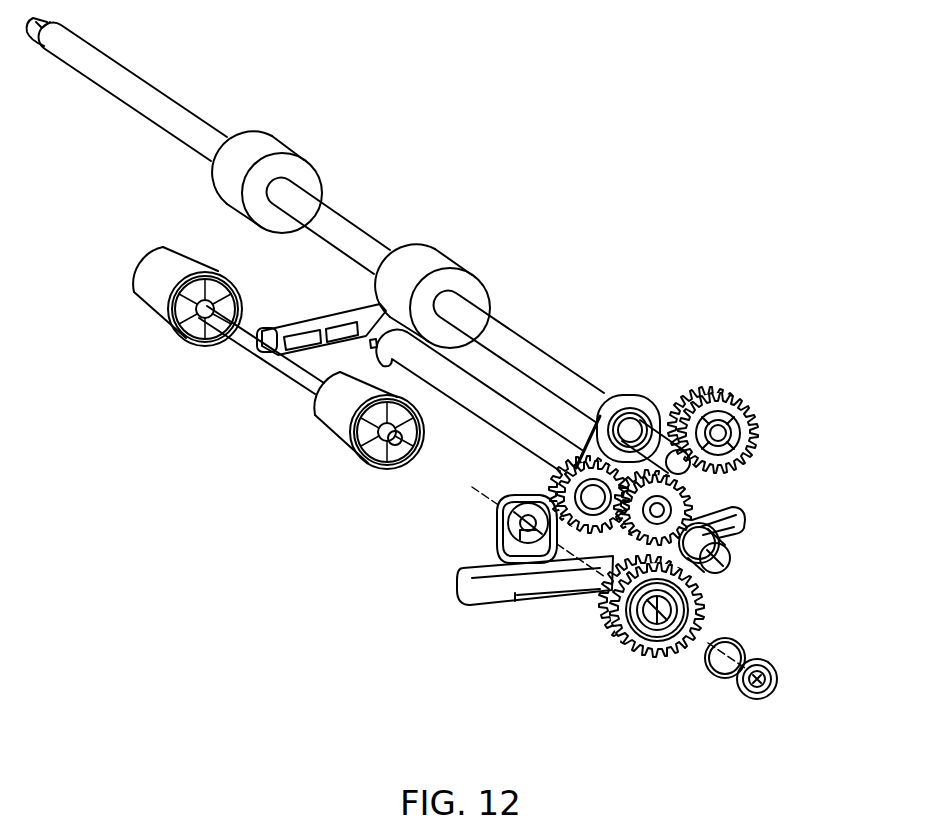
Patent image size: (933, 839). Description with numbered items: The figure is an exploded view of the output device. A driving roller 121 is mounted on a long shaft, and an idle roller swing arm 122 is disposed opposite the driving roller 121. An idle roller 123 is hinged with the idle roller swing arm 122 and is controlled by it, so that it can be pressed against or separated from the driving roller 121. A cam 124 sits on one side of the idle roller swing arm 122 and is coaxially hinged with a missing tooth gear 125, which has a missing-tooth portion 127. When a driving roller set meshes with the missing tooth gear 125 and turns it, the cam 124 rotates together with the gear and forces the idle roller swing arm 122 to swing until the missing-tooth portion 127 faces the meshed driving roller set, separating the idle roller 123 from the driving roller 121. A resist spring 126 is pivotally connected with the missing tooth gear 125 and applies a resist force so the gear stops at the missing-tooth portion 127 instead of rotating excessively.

The driving roller 121 is at (228, 180).
The idle roller swing arm 122 is at (485, 585).
The idle roller 123 is at (334, 420).
The cam 124 is at (498, 533).
The missing tooth gear 125 is at (614, 623).
The resist spring 126 is at (723, 656).
The missing-tooth portion 127 is at (698, 557).